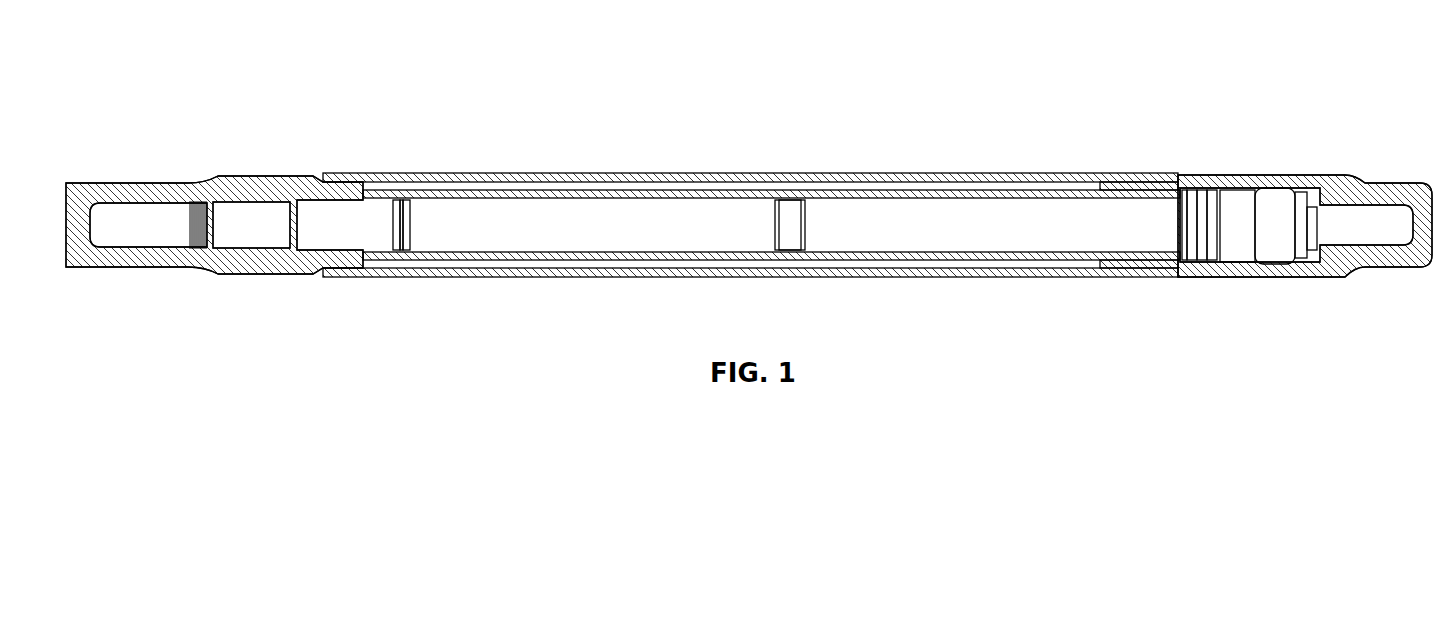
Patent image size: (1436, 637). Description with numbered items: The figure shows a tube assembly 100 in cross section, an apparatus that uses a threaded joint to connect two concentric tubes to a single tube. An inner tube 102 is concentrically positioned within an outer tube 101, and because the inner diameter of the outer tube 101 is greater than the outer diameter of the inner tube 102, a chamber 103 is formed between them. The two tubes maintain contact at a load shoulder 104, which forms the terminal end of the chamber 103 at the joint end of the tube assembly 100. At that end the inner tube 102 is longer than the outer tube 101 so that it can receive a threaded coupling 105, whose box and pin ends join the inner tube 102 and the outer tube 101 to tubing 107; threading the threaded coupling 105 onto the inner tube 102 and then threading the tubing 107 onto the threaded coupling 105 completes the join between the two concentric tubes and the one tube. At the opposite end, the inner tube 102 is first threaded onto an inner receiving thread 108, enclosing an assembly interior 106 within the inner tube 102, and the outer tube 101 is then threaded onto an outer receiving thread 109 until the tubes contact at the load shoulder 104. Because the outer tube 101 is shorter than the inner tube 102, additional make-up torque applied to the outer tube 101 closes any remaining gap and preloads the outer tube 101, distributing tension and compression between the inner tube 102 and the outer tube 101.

The tube assembly 100 is at (200, 92).
The outer tube 101 is at (405, 178).
The inner tube 102 is at (572, 192).
The chamber 103 is at (476, 190).
The load shoulder 104 is at (1103, 180).
The threaded coupling 105 is at (1158, 270).
The assembly interior 106 is at (917, 225).
The tubing 107 is at (1357, 262).
The inner receiving thread 108 is at (388, 256).
The outer receiving thread 109 is at (335, 275).